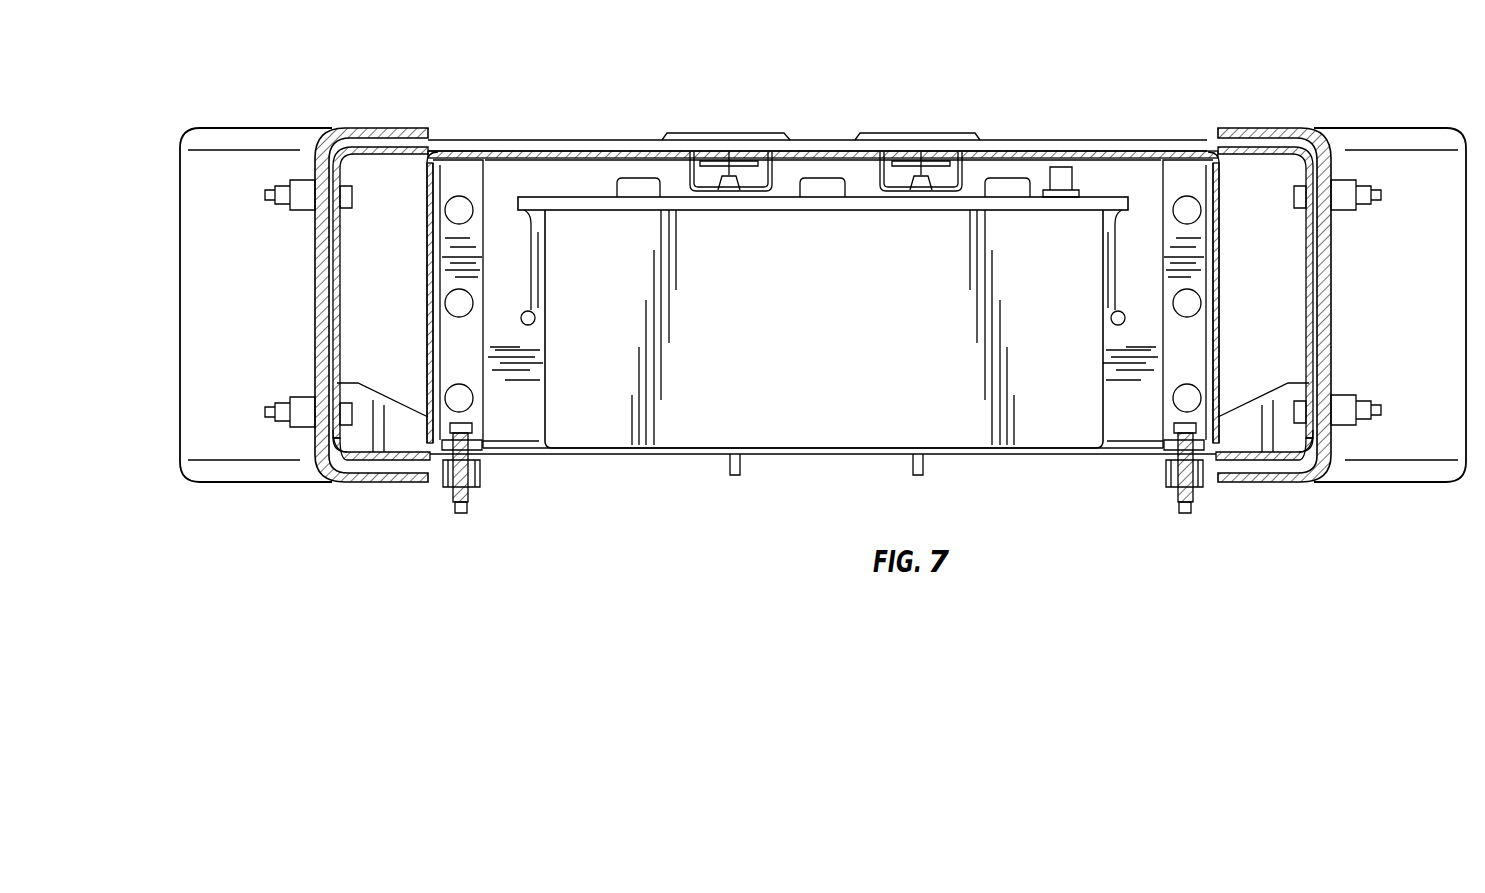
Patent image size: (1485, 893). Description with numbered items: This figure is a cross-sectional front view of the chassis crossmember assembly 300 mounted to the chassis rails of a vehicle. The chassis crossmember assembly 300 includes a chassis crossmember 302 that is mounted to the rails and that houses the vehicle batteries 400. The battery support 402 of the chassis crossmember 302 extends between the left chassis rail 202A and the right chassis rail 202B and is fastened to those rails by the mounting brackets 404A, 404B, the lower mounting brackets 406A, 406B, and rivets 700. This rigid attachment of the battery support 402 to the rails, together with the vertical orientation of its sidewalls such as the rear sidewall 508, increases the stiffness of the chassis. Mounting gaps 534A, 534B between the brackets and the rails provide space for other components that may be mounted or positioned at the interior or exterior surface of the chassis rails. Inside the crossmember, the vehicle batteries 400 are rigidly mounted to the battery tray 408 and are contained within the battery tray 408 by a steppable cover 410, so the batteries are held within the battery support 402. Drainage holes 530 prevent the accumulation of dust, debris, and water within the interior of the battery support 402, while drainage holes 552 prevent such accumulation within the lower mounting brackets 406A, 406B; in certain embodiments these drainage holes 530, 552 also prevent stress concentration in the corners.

The left chassis rail 202A is at (262, 130).
The right chassis rail 202B is at (1398, 130).
The chassis crossmember assembly 300 is at (1069, 130).
The chassis crossmember 302 is at (432, 152).
The vehicle batteries 400 is at (625, 425).
The battery support 402 is at (795, 450).
The mounting bracket 404A is at (1238, 157).
The mounting bracket 404B is at (357, 157).
The lower mounting bracket 406A is at (1272, 461).
The lower mounting bracket 406B is at (378, 461).
The battery tray 408 is at (1037, 455).
The steppable cover 410 is at (628, 150).
The rear sidewall 508 is at (540, 178).
The drainage holes 530 is at (433, 458).
The mounting gap 534A is at (1328, 306).
The mounting gap 534B is at (326, 264).
The drainage holes 552 is at (336, 462).
The rivets 700 is at (283, 195).